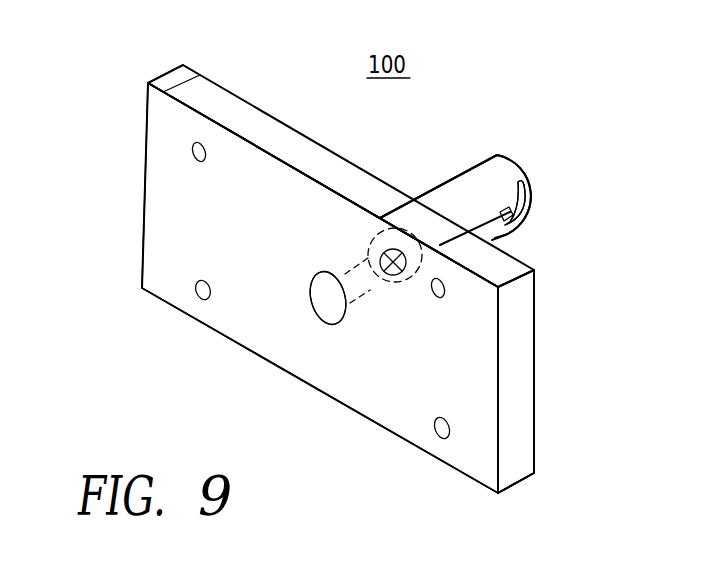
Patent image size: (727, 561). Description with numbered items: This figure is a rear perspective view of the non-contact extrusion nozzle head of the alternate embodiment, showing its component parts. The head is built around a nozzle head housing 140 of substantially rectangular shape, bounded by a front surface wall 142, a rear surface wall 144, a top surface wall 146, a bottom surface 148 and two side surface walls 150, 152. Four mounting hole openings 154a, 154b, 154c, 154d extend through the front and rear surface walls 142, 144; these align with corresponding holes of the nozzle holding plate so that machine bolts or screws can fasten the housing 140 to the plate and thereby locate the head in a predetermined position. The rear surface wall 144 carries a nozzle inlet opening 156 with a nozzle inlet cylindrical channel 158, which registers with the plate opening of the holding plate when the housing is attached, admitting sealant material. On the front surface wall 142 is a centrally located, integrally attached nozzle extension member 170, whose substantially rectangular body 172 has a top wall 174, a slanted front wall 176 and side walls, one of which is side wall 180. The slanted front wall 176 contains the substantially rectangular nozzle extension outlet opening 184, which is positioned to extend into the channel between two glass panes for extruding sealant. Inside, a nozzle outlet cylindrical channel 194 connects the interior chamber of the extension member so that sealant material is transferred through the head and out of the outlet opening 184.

The nozzle head housing 140 is at (272, 336).
The front surface wall 142 is at (508, 372).
The rear surface wall 144 is at (223, 240).
The top surface wall 146 is at (525, 447).
The bottom surface 148 is at (300, 140).
The side surface wall 150 is at (198, 85).
The side surface wall 152 is at (516, 413).
The mounting hole opening 154a is at (200, 294).
The mounting hole opening 154b is at (194, 153).
The mounting hole opening 154c is at (443, 295).
The mounting hole opening 154d is at (441, 438).
The nozzle inlet opening 156 is at (326, 302).
The nozzle inlet cylindrical channel 158 is at (323, 288).
The nozzle extension member 170 is at (548, 143).
The body 172 is at (498, 160).
The top wall 174 is at (523, 185).
The slanted front wall 176 is at (488, 241).
The side wall 180 is at (473, 188).
The nozzle extension outlet opening 184 is at (512, 217).
The nozzle outlet cylindrical channel 194 is at (393, 267).